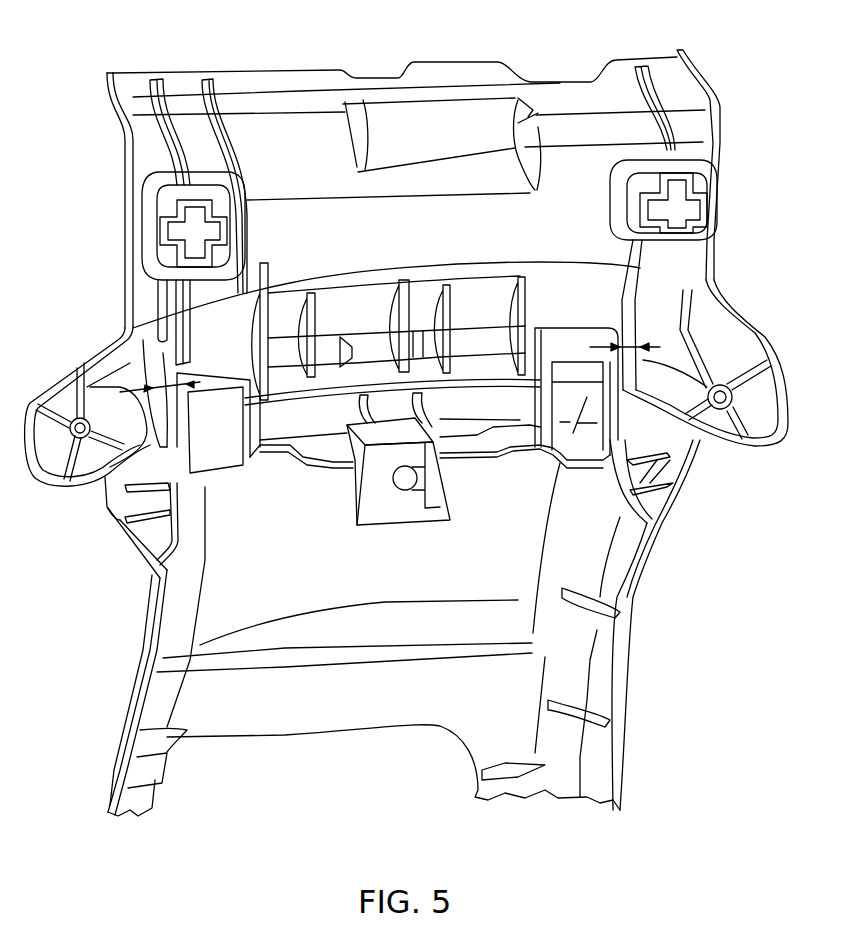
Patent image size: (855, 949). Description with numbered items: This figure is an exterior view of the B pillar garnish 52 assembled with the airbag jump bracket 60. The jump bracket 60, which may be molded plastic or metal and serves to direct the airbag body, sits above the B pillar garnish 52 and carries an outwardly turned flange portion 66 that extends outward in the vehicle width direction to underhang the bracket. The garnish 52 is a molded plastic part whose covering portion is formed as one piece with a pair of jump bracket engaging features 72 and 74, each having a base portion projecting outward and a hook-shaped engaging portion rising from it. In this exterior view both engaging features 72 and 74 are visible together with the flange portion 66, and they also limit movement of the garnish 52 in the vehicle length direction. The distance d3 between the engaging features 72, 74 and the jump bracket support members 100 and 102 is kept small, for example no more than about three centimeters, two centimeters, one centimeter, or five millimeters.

The B pillar garnish 52 is at (662, 613).
The airbag jump bracket 60 is at (730, 85).
The outwardly turned flange portion 66 is at (288, 380).
The jump bracket engaging feature 72 is at (551, 306).
The jump bracket engaging feature 74 is at (250, 313).
The jump bracket support member 100 is at (640, 280).
The jump bracket support member 102 is at (160, 340).
The distance d3 is at (120, 391).